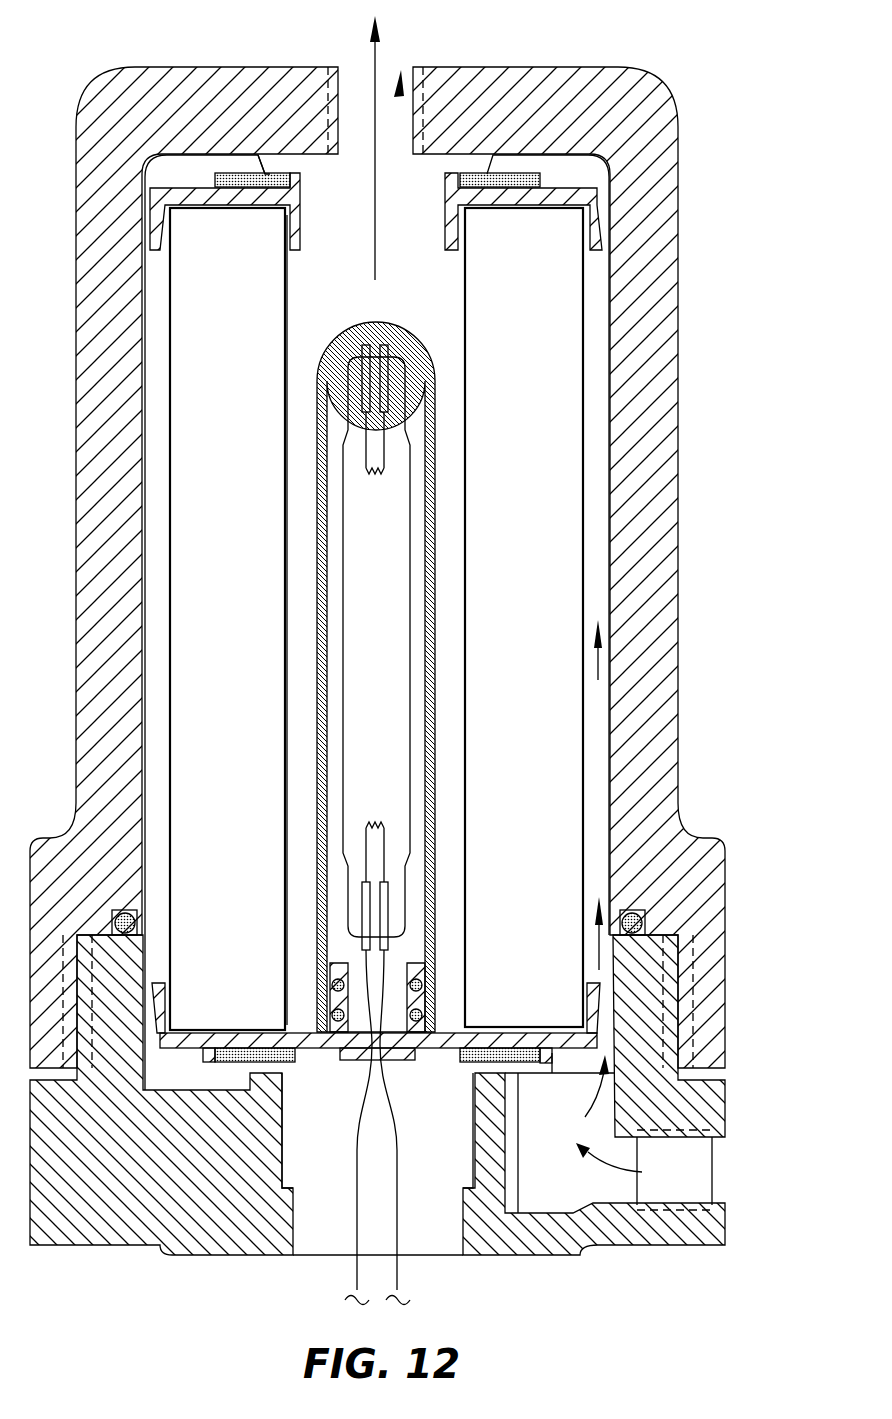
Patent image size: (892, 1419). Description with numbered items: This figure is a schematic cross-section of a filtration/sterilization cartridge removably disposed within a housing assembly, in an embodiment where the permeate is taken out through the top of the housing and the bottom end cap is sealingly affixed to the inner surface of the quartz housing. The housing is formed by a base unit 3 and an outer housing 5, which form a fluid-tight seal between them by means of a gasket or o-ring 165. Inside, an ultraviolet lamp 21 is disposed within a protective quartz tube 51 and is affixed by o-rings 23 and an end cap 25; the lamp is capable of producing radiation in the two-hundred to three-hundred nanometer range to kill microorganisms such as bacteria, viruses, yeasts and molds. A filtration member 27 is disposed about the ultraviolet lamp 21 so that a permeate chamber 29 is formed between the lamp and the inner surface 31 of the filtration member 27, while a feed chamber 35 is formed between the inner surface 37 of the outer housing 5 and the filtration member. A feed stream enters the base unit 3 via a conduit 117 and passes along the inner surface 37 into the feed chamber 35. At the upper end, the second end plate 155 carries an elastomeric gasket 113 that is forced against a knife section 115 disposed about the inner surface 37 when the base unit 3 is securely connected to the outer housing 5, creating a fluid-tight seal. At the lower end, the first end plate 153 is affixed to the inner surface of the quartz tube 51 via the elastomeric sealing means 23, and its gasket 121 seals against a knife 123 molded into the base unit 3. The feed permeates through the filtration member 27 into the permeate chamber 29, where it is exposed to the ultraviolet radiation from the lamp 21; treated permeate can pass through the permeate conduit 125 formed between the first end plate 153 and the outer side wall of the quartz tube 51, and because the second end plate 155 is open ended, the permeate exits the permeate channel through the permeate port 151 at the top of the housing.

The base unit 3 is at (68, 1252).
The outer housing 5 is at (682, 258).
The ultraviolet lamp 21 is at (410, 547).
The o-rings 23 is at (452, 1013).
The end cap 25 is at (358, 1062).
The filtration member 27 is at (375, 619).
The permeate chamber 29 is at (313, 293).
The inner surface of filtration member 31 is at (288, 536).
The feed chamber 35 is at (593, 462).
The inner surface of outer housing 37 is at (614, 370).
The protective quartz tube 51 is at (432, 393).
The gasket 113 is at (241, 170).
The knife section 115 is at (263, 170).
The conduit 117 is at (698, 1160).
The gasket 121 is at (514, 1053).
The knife 123 is at (495, 1070).
The permeate conduit 125 is at (470, 1170).
The permeate port 151 is at (401, 70).
The first end plate 153 is at (598, 1018).
The second end plate 155 is at (173, 193).
The gasket or o-ring 165 is at (135, 922).